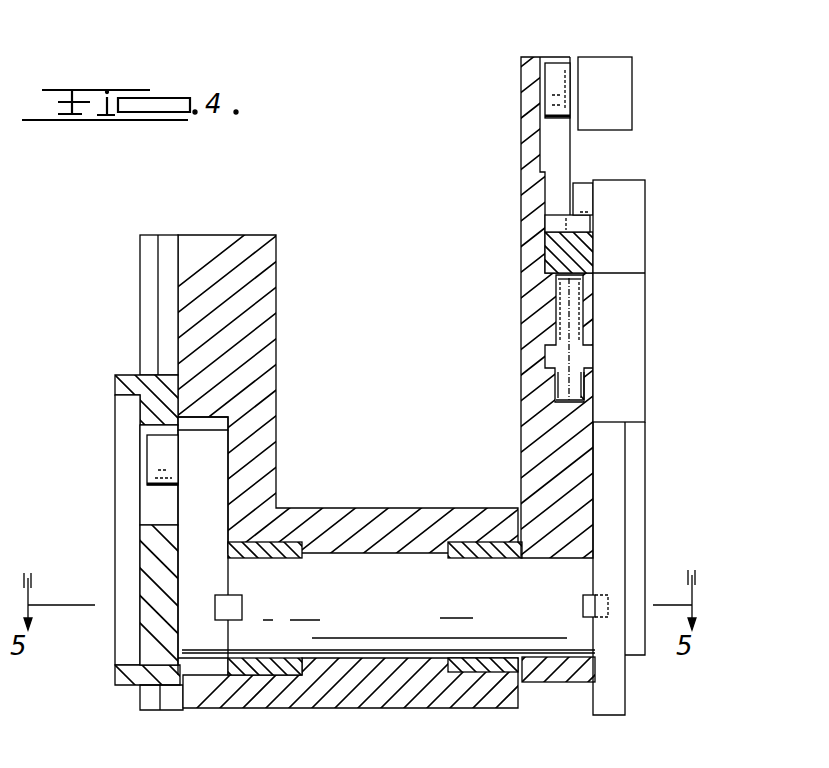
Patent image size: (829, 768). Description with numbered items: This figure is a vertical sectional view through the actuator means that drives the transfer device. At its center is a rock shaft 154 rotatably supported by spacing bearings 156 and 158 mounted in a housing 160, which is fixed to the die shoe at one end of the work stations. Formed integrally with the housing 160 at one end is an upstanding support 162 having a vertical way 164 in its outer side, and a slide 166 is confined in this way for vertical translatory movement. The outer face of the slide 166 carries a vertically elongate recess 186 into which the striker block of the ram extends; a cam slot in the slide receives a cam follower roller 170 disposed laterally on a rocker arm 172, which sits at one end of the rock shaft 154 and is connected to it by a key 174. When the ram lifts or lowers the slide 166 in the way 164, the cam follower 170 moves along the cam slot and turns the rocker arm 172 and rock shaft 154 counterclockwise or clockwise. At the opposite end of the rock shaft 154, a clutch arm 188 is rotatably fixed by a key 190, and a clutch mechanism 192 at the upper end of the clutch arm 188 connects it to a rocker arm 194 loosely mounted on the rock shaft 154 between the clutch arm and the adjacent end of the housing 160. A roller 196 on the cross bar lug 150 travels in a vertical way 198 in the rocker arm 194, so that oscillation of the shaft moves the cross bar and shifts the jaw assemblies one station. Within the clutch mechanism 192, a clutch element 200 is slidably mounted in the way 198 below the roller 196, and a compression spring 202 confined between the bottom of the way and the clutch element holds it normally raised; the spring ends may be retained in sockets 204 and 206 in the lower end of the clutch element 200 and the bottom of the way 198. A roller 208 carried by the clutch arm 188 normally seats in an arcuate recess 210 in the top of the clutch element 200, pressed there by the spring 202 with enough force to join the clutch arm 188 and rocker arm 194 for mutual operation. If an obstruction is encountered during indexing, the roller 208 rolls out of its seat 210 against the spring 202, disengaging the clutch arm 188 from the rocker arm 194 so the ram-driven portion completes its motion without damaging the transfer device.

The cross bar lug 150 is at (618, 80).
The rock shaft 154 is at (394, 613).
The spacing bearing 156 is at (263, 553).
The spacing bearing 158 is at (492, 555).
The housing 160 is at (332, 505).
The upstanding support 162 is at (350, 390).
The vertical way 164 is at (162, 257).
The slide 166 is at (135, 380).
The cam follower roller 170 is at (160, 452).
The rocker arm 172 is at (195, 503).
The key 174 is at (225, 608).
The vertically elongate recess 186 is at (128, 411).
The clutch arm 188 is at (630, 305).
The key 190 is at (582, 605).
The clutch mechanism 192 is at (584, 308).
The rocker arm 194 is at (535, 440).
The roller 196 is at (560, 72).
The vertical way 198 is at (555, 155).
The clutch element 200 is at (553, 263).
The compression spring 202 is at (588, 390).
The socket 204 is at (562, 318).
The socket 206 is at (568, 383).
The roller 208 is at (586, 197).
The arcuate recess 210 is at (582, 229).